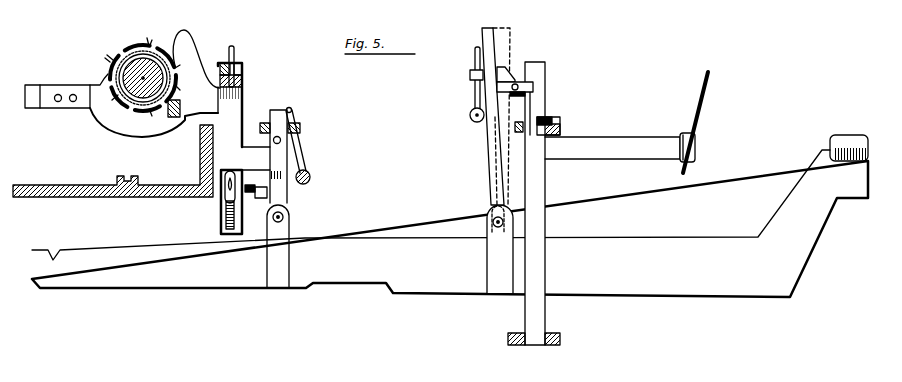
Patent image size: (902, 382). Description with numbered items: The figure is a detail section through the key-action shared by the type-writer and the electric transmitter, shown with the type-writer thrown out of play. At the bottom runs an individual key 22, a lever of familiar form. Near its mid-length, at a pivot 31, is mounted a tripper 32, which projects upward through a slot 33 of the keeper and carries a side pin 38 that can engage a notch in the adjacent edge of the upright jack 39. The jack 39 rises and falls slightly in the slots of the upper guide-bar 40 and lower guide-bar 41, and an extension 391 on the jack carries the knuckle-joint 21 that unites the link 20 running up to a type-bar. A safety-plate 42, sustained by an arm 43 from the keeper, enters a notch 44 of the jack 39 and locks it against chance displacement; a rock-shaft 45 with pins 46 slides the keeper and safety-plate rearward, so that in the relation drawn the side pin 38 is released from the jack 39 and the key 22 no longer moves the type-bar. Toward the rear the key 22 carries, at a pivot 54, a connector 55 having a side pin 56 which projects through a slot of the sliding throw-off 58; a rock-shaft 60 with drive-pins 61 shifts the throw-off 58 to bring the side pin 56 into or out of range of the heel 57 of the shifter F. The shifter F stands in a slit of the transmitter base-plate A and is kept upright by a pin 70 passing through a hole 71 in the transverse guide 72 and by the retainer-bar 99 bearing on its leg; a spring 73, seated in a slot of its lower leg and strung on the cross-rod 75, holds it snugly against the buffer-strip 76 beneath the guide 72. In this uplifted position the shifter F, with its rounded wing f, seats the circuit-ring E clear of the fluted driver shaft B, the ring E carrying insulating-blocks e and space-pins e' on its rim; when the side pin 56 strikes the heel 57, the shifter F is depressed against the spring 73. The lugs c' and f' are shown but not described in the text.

The link 20 is at (702, 101).
The knuckle-joint 21 is at (697, 150).
The key 22 is at (450, 216).
The pivot 31 is at (492, 222).
The tripper 32 is at (512, 50).
The slot 33 is at (470, 75).
The side pin 38 is at (533, 89).
The jack 39 is at (535, 203).
The extension 391 is at (612, 148).
The upper guide-bar 40 is at (560, 129).
The lower guide-bar 41 is at (560, 339).
The safety-plate 42 is at (552, 119).
The arm 43 is at (512, 74).
The notch 44 is at (541, 135).
The rock-shaft 45 is at (469, 122).
The pin 46 is at (474, 95).
The pivot 54 is at (285, 217).
The connector 55 is at (287, 186).
The side pin 56 is at (300, 129).
The heel 57 is at (252, 157).
The throw-off 58 is at (292, 114).
The rock-shaft 60 is at (310, 173).
The drive-pin 61 is at (298, 150).
The pin 70 is at (236, 50).
The hole 71 is at (244, 68).
The guide 72 is at (223, 63).
The spring 73 is at (226, 216).
The cross-rod 75 is at (230, 176).
The buffer-strip 76 is at (244, 81).
The retainer-bar 99 is at (248, 193).
The base-plate A is at (105, 195).
The fluted shaft B is at (108, 78).
The ring E is at (154, 44).
The shifter F is at (205, 105).
The insulating-block e is at (142, 103).
The space-pin e' is at (165, 52).
The lug c' is at (100, 50).
The wing f is at (114, 110).
The finger f' is at (196, 53).